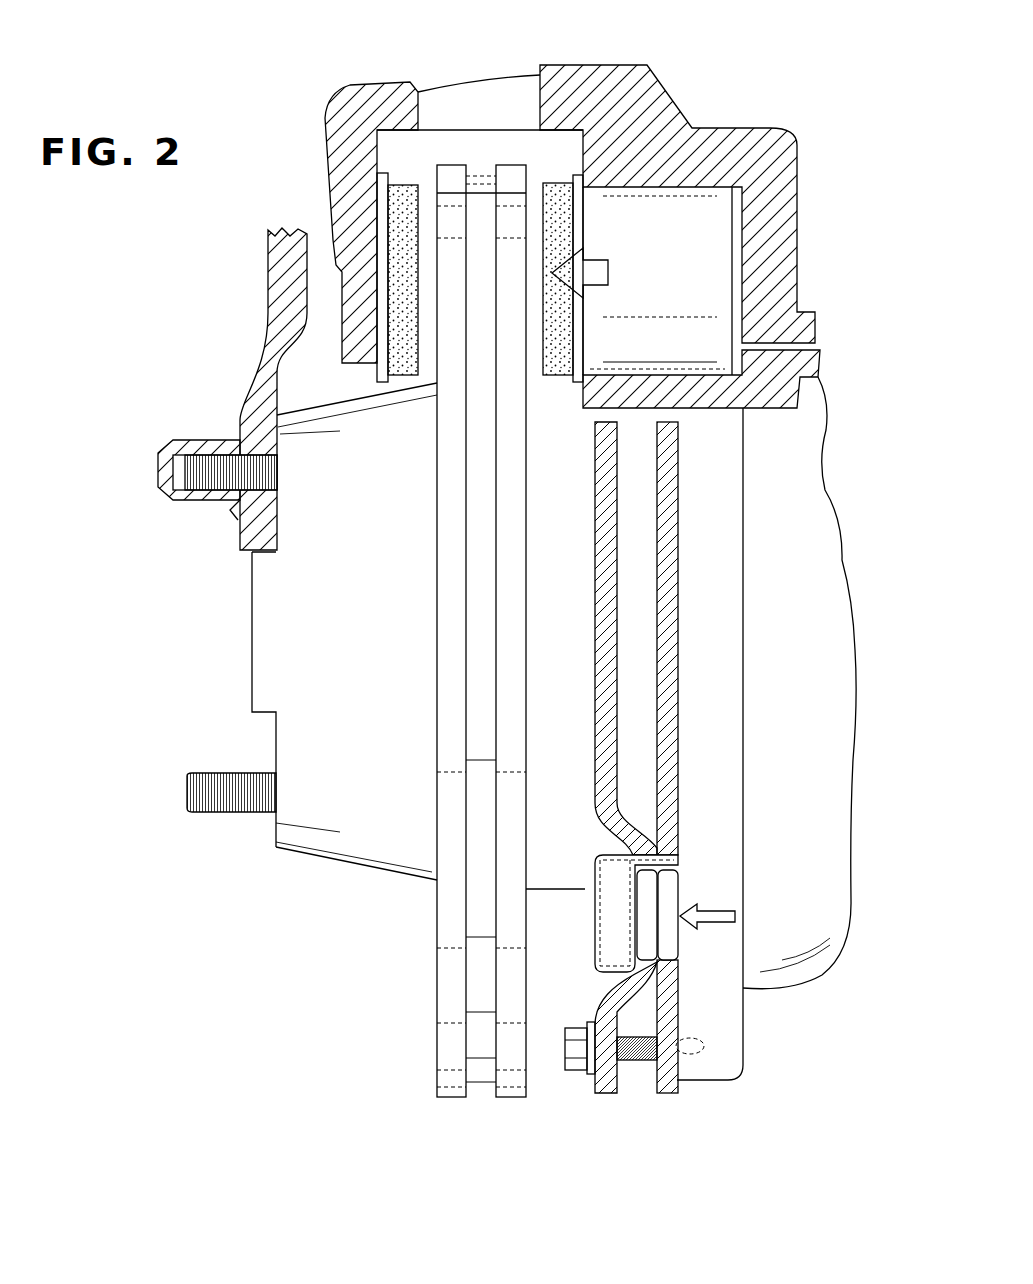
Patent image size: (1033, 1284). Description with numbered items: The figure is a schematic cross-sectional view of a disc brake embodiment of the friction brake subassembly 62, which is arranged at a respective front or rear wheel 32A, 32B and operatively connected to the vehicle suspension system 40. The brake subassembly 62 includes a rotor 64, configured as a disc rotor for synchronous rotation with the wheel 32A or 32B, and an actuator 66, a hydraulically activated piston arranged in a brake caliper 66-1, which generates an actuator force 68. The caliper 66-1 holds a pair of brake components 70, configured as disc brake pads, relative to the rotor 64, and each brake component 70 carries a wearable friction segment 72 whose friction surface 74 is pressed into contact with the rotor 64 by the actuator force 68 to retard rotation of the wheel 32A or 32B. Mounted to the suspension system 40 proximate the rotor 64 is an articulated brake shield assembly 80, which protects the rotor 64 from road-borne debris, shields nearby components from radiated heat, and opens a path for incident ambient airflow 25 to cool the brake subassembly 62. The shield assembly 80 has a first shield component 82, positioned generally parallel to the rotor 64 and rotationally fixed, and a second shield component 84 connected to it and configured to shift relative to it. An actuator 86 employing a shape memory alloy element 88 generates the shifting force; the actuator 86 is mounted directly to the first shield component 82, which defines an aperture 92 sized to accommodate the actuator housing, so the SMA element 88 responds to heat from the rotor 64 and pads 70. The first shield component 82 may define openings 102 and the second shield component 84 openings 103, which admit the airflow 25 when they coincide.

The articulated brake shield assembly 80 is at (228, 72).
The friction brake subassembly 62 is at (753, 72).
The actuator 66 is at (686, 212).
The brake caliper 66-1 is at (343, 136).
The actuator force 68 is at (590, 253).
The front wheel 32A is at (192, 396).
The rear wheel 32B is at (217, 470).
The friction segment 72 is at (403, 343).
The friction surface 74 is at (421, 328).
The brake component 70 is at (427, 357).
The rotor 64 is at (515, 526).
The shape memory alloy element 88 is at (594, 905).
The opening 102 is at (655, 898).
The opening 103 is at (668, 912).
The incident ambient airflow 25 is at (738, 905).
The actuator 86 is at (588, 950).
The aperture 92 is at (592, 986).
The vehicle suspension system 40 is at (812, 988).
The first shield component 82 is at (595, 1085).
The second shield component 84 is at (677, 1085).